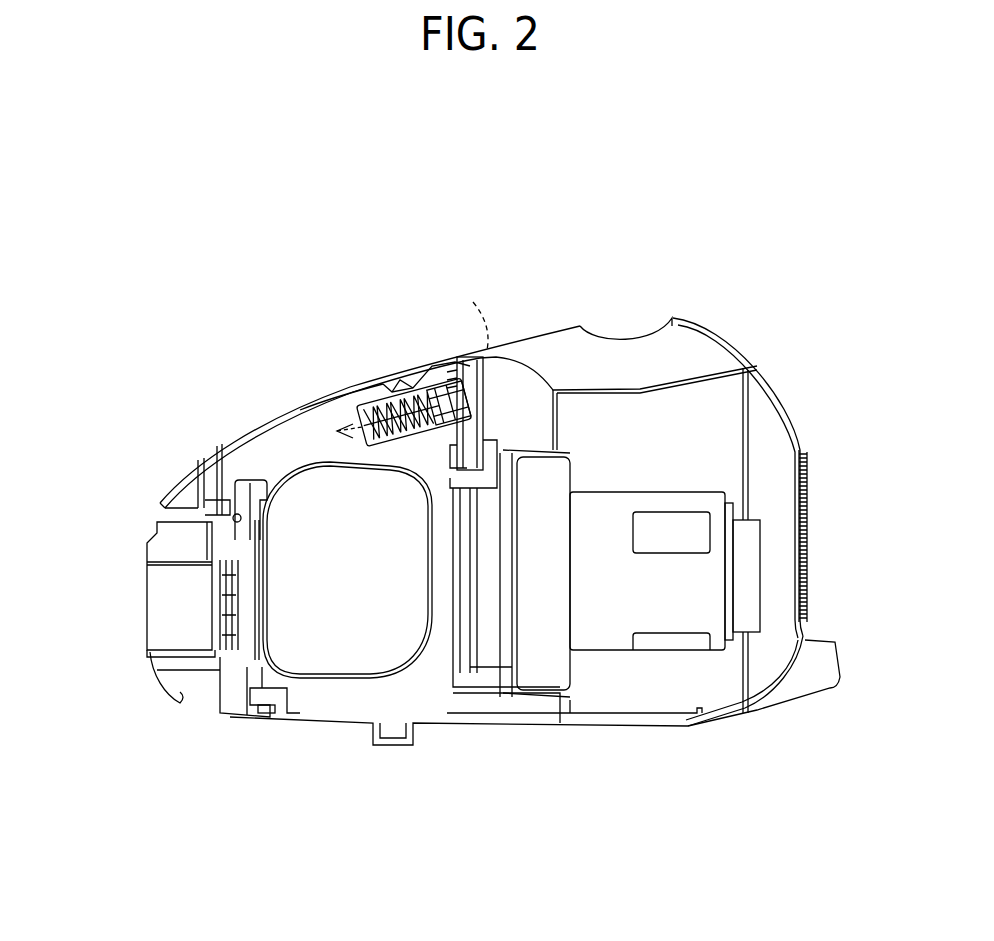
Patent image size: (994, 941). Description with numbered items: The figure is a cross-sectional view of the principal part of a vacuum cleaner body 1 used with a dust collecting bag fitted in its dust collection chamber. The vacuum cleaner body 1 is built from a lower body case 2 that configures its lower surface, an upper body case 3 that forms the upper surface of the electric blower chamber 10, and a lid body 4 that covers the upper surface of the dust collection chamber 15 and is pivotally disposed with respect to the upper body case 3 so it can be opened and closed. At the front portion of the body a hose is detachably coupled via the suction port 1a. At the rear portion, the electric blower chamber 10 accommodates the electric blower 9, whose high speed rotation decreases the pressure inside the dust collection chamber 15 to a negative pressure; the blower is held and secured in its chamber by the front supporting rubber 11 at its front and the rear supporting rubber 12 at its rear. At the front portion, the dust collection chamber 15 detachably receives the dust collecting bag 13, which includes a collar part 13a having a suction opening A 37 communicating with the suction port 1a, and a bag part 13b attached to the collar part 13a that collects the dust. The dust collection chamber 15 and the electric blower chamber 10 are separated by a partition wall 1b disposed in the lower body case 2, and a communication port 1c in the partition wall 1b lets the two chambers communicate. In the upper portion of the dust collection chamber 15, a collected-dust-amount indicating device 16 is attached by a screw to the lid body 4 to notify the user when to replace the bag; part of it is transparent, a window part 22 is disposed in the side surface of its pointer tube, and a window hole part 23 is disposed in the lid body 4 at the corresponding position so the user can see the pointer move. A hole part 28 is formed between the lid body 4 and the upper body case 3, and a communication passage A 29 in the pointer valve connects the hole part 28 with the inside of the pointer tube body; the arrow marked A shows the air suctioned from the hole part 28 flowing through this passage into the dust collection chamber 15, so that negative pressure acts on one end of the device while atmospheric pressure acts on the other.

The vacuum cleaner body 1 is at (836, 874).
The suction port 1a is at (172, 610).
The partition wall 1b is at (473, 450).
The communication port 1c is at (470, 630).
The lower body case 2 is at (553, 727).
The upper body case 3 is at (723, 334).
The lid body 4 is at (298, 403).
The electric blower 9 is at (590, 632).
The electric blower chamber 10 is at (663, 710).
The front supporting rubber 11 is at (507, 693).
The rear supporting rubber 12 is at (752, 607).
The dust collecting bag 13 is at (327, 650).
The collar part 13a is at (248, 478).
The bag part 13b is at (370, 677).
The dust collection chamber 15 is at (273, 437).
The collected-dust-amount indicating device 16 is at (363, 400).
The window part 22 is at (403, 390).
The window hole part 23 is at (393, 380).
The hole part 28 is at (477, 360).
The communication passage A 29 is at (462, 392).
The suction opening A 37 is at (263, 613).